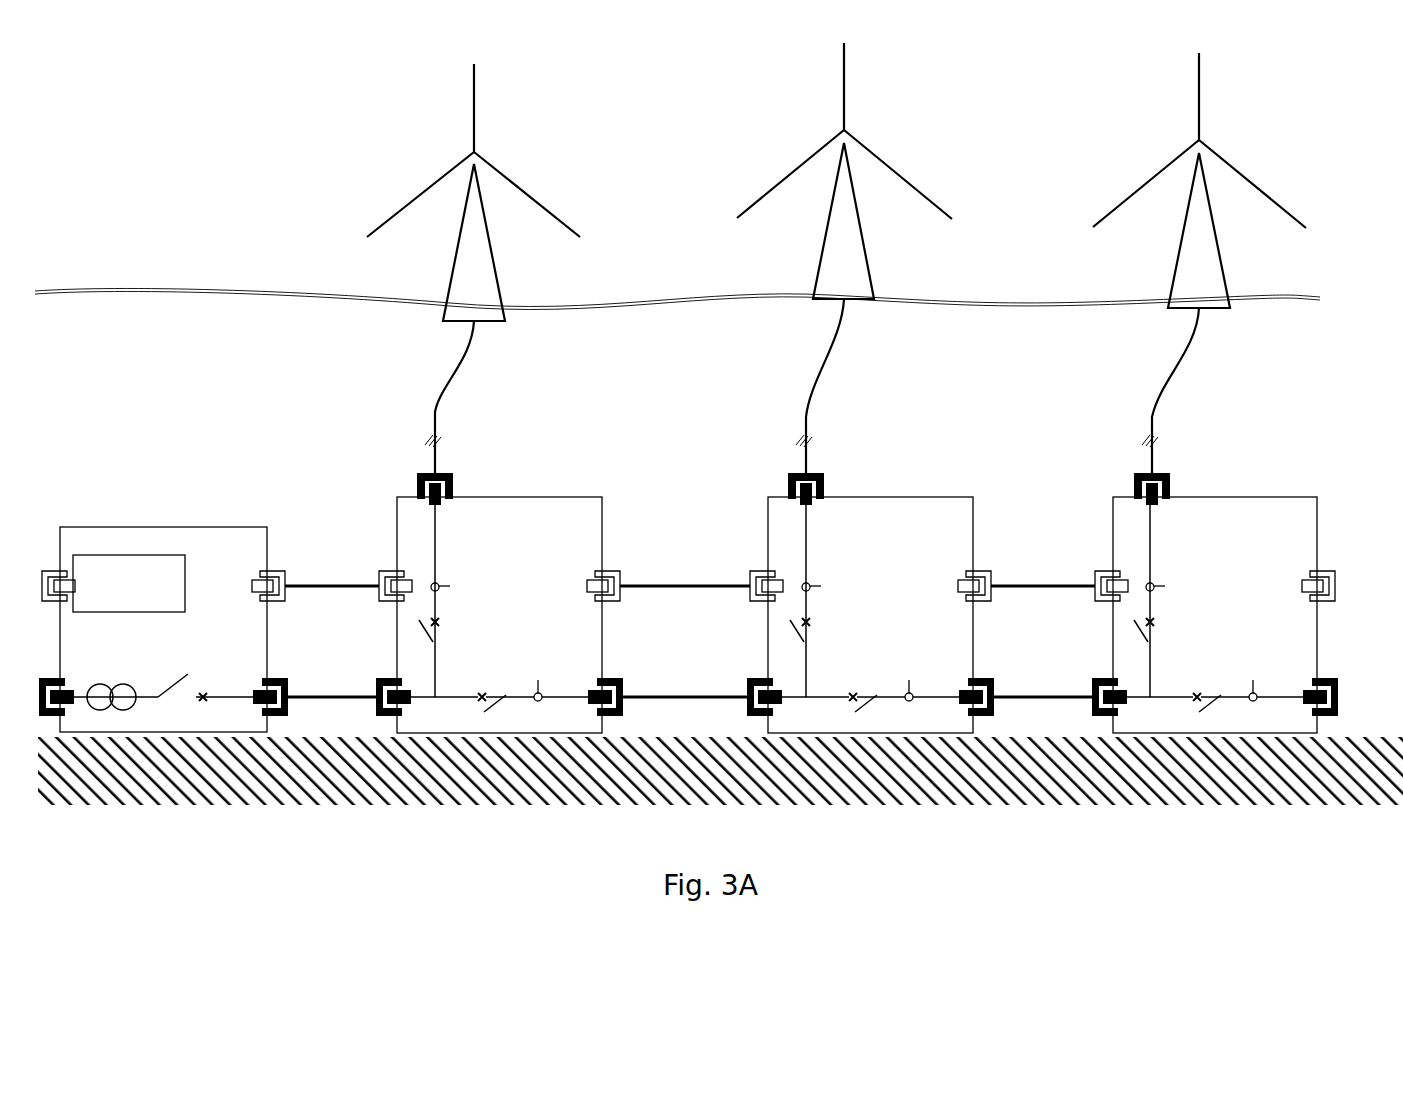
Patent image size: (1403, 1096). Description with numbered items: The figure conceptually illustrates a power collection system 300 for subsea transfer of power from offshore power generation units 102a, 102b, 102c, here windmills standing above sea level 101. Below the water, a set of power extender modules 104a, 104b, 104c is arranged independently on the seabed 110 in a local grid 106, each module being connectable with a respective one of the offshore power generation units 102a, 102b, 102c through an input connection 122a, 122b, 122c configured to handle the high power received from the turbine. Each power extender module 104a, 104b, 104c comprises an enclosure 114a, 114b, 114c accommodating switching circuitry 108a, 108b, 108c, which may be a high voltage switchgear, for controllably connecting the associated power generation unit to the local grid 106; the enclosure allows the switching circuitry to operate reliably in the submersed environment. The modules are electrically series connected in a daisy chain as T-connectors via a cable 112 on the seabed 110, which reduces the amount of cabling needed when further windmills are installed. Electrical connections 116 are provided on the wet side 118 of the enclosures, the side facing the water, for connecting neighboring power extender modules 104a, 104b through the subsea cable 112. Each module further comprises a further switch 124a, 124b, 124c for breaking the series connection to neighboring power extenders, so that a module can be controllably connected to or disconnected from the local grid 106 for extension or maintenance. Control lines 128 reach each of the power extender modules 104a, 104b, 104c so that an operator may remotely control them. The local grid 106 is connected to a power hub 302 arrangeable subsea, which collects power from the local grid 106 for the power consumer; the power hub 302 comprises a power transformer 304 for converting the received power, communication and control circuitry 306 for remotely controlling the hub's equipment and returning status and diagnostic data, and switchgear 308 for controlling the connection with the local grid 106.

The sea level 101 is at (248, 282).
The offshore power generation unit 102a is at (412, 147).
The offshore power generation unit 102b is at (778, 156).
The offshore power generation unit 102c is at (1152, 153).
The power extender module 104a is at (442, 581).
The power extender module 104b is at (872, 555).
The power extender module 104c is at (1215, 558).
The local grid 106 is at (735, 472).
The switching circuitry 108a is at (452, 623).
The switching circuitry 108b is at (820, 623).
The switching circuitry 108c is at (1168, 625).
The seabed 110 is at (1363, 737).
The cable 112 is at (352, 688).
The enclosure 114a is at (393, 524).
The enclosure 114b is at (918, 488).
The enclosure 114c is at (1240, 492).
The electrical connection 116 is at (613, 673).
The wet side 118 is at (760, 503).
The input connection 122a is at (410, 472).
The input connection 122b is at (800, 472).
The input connection 122c is at (1122, 472).
The further switch 124a is at (493, 680).
The further switch 124b is at (863, 687).
The further switch 124c is at (1205, 690).
The control lines 128 is at (336, 582).
The power collection system 300 is at (195, 410).
The power hub 302 is at (163, 629).
The transformer 304 is at (132, 680).
The communication and control circuitry 306 is at (150, 596).
The switchgear 308 is at (198, 680).